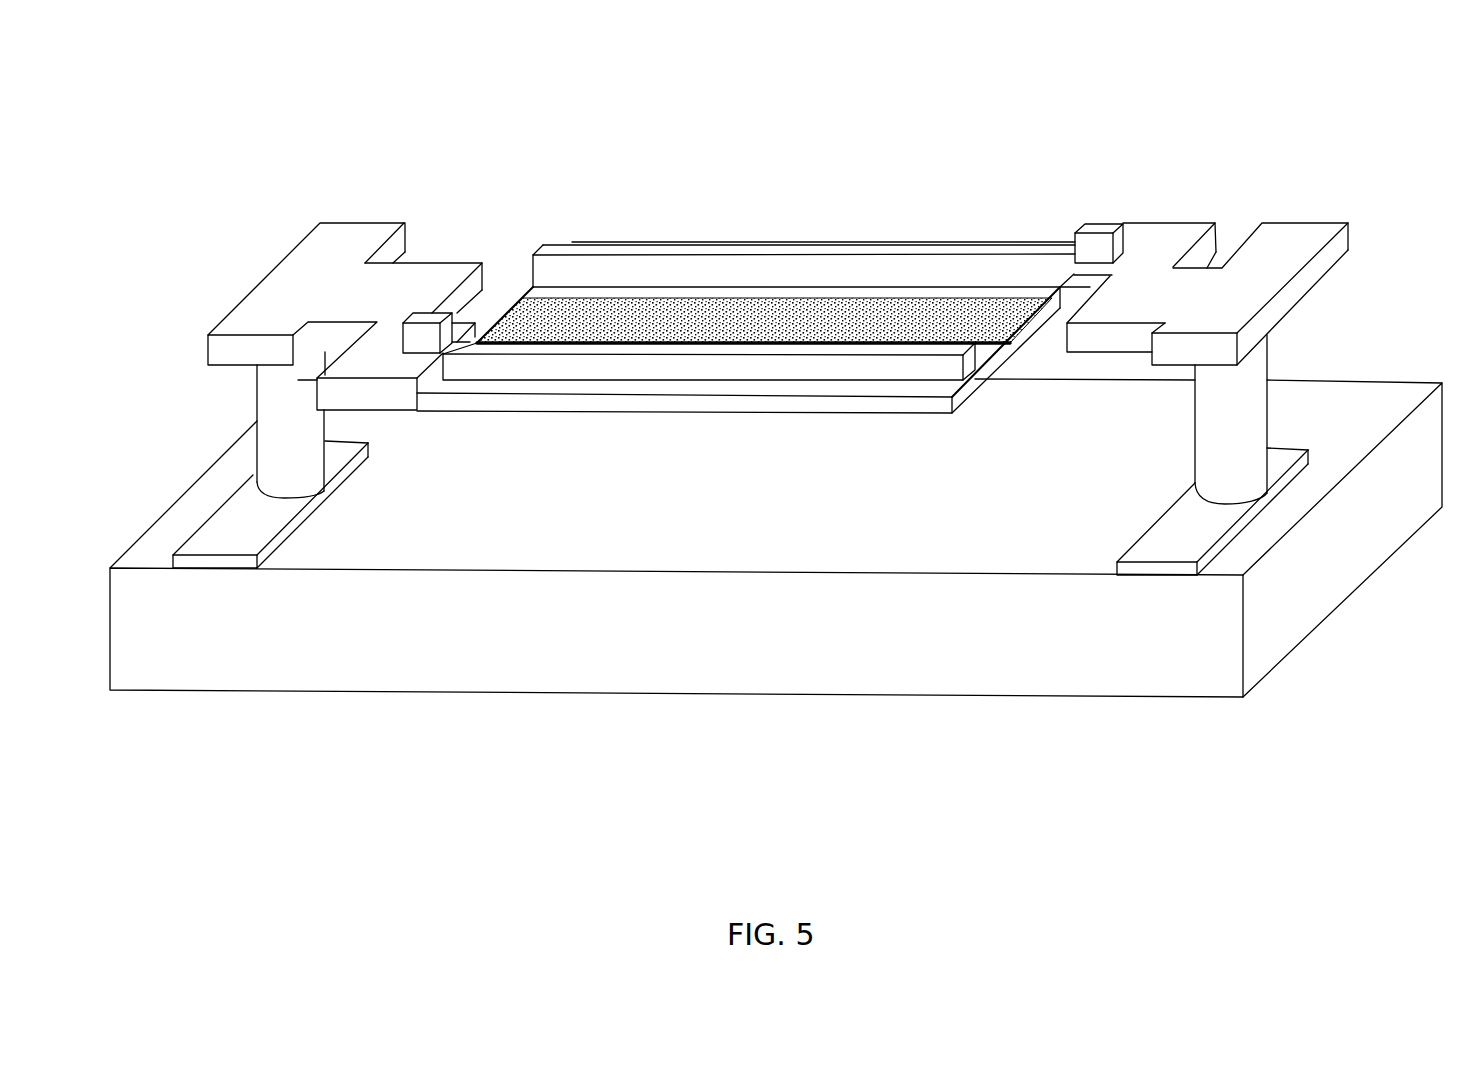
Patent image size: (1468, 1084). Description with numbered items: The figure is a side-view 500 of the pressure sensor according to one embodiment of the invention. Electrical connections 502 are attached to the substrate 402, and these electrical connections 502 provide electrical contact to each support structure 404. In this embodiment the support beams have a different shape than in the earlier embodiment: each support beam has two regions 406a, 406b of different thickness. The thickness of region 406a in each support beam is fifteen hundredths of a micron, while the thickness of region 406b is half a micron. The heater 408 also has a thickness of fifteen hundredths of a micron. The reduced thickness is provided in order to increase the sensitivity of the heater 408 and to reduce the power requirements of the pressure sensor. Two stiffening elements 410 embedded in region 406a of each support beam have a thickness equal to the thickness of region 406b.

The side-view 500 is at (1343, 175).
The substrate 402 is at (680, 693).
The support structure 404 is at (1240, 463).
The region of support beam 406a is at (940, 245).
The region of support beam 406b is at (368, 392).
The heater 408 is at (1017, 318).
The stiffening element 410 is at (487, 363).
The electrical connection 502 is at (210, 548).